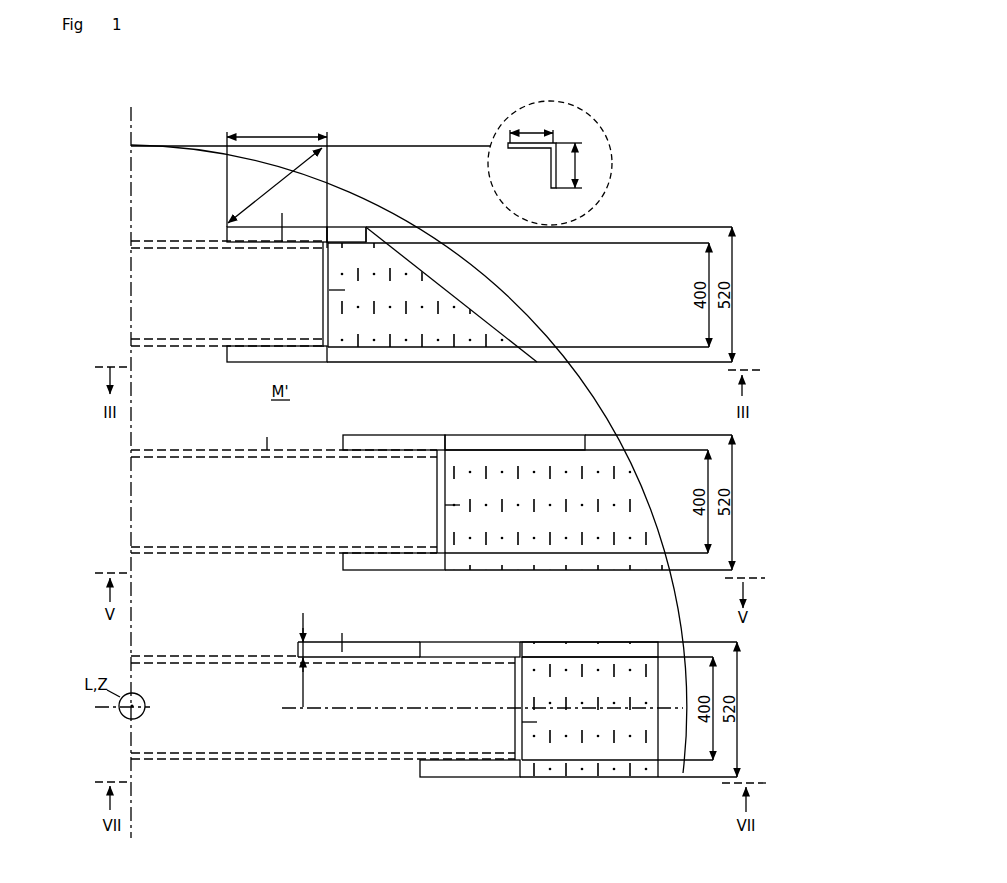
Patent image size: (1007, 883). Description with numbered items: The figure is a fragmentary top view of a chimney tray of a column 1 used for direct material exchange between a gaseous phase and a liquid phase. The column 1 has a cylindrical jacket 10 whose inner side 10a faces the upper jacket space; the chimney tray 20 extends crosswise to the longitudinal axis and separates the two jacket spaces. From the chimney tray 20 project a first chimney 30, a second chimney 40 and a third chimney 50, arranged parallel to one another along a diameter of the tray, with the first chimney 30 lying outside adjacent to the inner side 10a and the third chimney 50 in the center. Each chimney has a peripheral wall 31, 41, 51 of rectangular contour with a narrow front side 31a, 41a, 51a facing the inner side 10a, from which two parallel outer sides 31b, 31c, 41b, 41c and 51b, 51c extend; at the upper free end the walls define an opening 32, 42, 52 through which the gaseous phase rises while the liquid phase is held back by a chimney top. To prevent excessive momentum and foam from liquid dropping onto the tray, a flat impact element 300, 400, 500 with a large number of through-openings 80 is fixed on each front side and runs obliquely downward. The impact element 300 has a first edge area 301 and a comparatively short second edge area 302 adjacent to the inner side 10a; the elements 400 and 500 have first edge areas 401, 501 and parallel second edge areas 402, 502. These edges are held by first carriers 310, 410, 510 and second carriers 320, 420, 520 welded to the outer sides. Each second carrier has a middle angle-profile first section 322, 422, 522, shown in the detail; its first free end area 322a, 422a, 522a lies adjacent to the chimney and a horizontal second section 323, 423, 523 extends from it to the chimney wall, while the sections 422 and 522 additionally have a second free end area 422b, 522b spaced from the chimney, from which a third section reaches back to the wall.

The column 1 is at (406, 194).
The cylindrical jacket 10 is at (185, 150).
The inner side of the jacket 10a is at (571, 375).
The chimney tray 20 is at (563, 400).
The first chimney 30 is at (163, 239).
The peripheral wall of the first chimney 31 is at (188, 241).
The front side of the first chimney 31a is at (330, 290).
The outer side of the first chimney 31b is at (187, 348).
The outer side of the first chimney 31c is at (282, 237).
The opening of the first chimney 32 is at (175, 290).
The second chimney 40 is at (161, 447).
The peripheral wall of the second chimney 41 is at (237, 450).
The front side of the second chimney 41a is at (446, 505).
The outer side of the second chimney 41b is at (267, 553).
The outer side of the second chimney 41c is at (268, 450).
The opening of the second chimney 42 is at (163, 503).
The third chimney 50 is at (186, 654).
The peripheral wall of the third chimney 51 is at (244, 658).
The front side of the third chimney 51a is at (523, 722).
The outer side of the third chimney 51b is at (338, 758).
The outer side of the third chimney 51c is at (342, 652).
The opening of the third chimney 52 is at (180, 728).
The through-openings 80 is at (420, 334).
The flat impact element of the first chimney 300 is at (432, 279).
The first edge area of impact element 300 301 is at (357, 363).
The second edge area of impact element 300 302 is at (341, 235).
The first carrier of impact element 300 310 is at (276, 349).
The second carrier of impact element 300 320 is at (254, 236).
The first section of the second carrier 320 322 is at (344, 227).
The first free end area of section 322 322a is at (337, 227).
The second section of the second carrier 320 323 is at (270, 224).
The flat impact element of the second chimney 400 is at (568, 507).
The first edge area of impact element 400 401 is at (522, 562).
The second edge area of impact element 400 402 is at (522, 442).
The first carrier of impact element 400 410 is at (393, 557).
The second carrier of impact element 400 420 is at (390, 447).
The first section of the second carrier 420 422 is at (488, 435).
The first free end area of section 422 422a is at (458, 435).
The second free end area of section 422 422b is at (563, 433).
The second section of the second carrier 420 423 is at (402, 435).
The flat impact element of the third chimney 500 is at (613, 698).
The first edge area of impact element 500 501 is at (552, 763).
The second edge area of impact element 500 502 is at (563, 650).
The first carrier of impact element 500 510 is at (446, 760).
The second carrier of impact element 500 520 is at (456, 653).
The first section of the second carrier 520 522 is at (592, 640).
The first free end area of section 522 522a is at (527, 640).
The second free end area of section 522 522b is at (647, 640).
The second section of the second carrier 520 523 is at (453, 640).